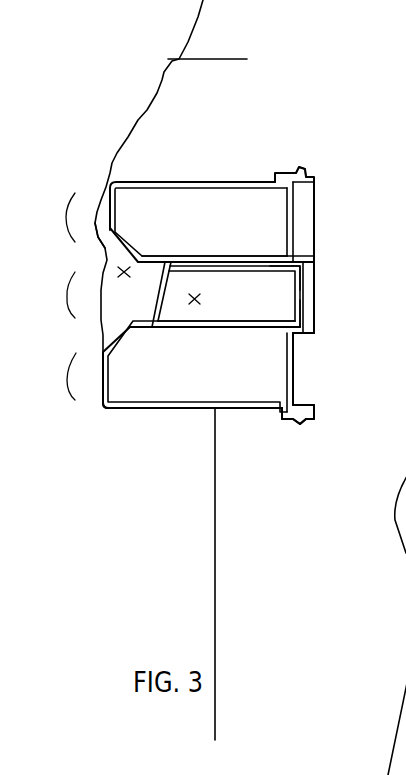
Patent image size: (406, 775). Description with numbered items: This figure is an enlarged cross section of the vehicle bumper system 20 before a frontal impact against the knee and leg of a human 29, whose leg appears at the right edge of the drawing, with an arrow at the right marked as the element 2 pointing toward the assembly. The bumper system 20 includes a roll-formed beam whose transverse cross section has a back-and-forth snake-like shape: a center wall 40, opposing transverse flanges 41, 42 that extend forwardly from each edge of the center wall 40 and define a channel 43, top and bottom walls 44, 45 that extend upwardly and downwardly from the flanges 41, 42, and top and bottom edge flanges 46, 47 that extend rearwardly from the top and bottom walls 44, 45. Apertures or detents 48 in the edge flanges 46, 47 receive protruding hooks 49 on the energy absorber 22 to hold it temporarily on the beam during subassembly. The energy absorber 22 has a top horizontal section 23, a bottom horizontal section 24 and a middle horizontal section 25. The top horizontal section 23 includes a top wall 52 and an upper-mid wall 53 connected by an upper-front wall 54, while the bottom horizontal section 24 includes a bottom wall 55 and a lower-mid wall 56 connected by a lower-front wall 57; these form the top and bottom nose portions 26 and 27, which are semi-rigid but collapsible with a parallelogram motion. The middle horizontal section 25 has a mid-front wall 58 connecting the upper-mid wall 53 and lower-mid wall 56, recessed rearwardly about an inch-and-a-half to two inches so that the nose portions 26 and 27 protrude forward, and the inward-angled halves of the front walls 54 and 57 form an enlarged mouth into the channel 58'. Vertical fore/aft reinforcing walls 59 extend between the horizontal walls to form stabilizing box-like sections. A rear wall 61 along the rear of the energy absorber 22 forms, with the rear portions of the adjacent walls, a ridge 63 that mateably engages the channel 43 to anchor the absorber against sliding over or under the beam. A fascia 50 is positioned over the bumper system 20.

The window frame assembly 2 is at (358, 312).
The vehicle bumper system 20 is at (107, 116).
The energy absorber 22 is at (244, 165).
The top horizontal section 23 is at (66, 222).
The bottom horizontal section 24 is at (66, 385).
The middle horizontal section 25 is at (67, 302).
The top nose portion 26 is at (126, 196).
The bottom nose portion 27 is at (126, 395).
The human 29 is at (403, 553).
The center wall 40 is at (315, 300).
The transverse flange 41 is at (305, 258).
The transverse flange 42 is at (307, 335).
The channel 43 is at (295, 308).
The top wall 44 is at (295, 232).
The bottom wall 45 is at (295, 373).
The top edge flange 46 is at (315, 190).
The bottom edge flange 47 is at (306, 416).
The aperture or detent 48 is at (306, 182).
The protruding hook 49 is at (298, 170).
The fascia 50 is at (145, 108).
The top wall 52 is at (137, 183).
The upper-mid wall 53 is at (192, 260).
The upper-front wall 54 is at (97, 247).
The bottom wall 55 is at (160, 392).
The lower-mid wall 56 is at (183, 328).
The lower-front wall 57 is at (121, 330).
The mid-front wall 58 is at (148, 294).
The channel 58' is at (100, 291).
The reinforcing wall 59 is at (196, 295).
The rear wall 61 is at (288, 283).
The ridge 63 is at (274, 320).